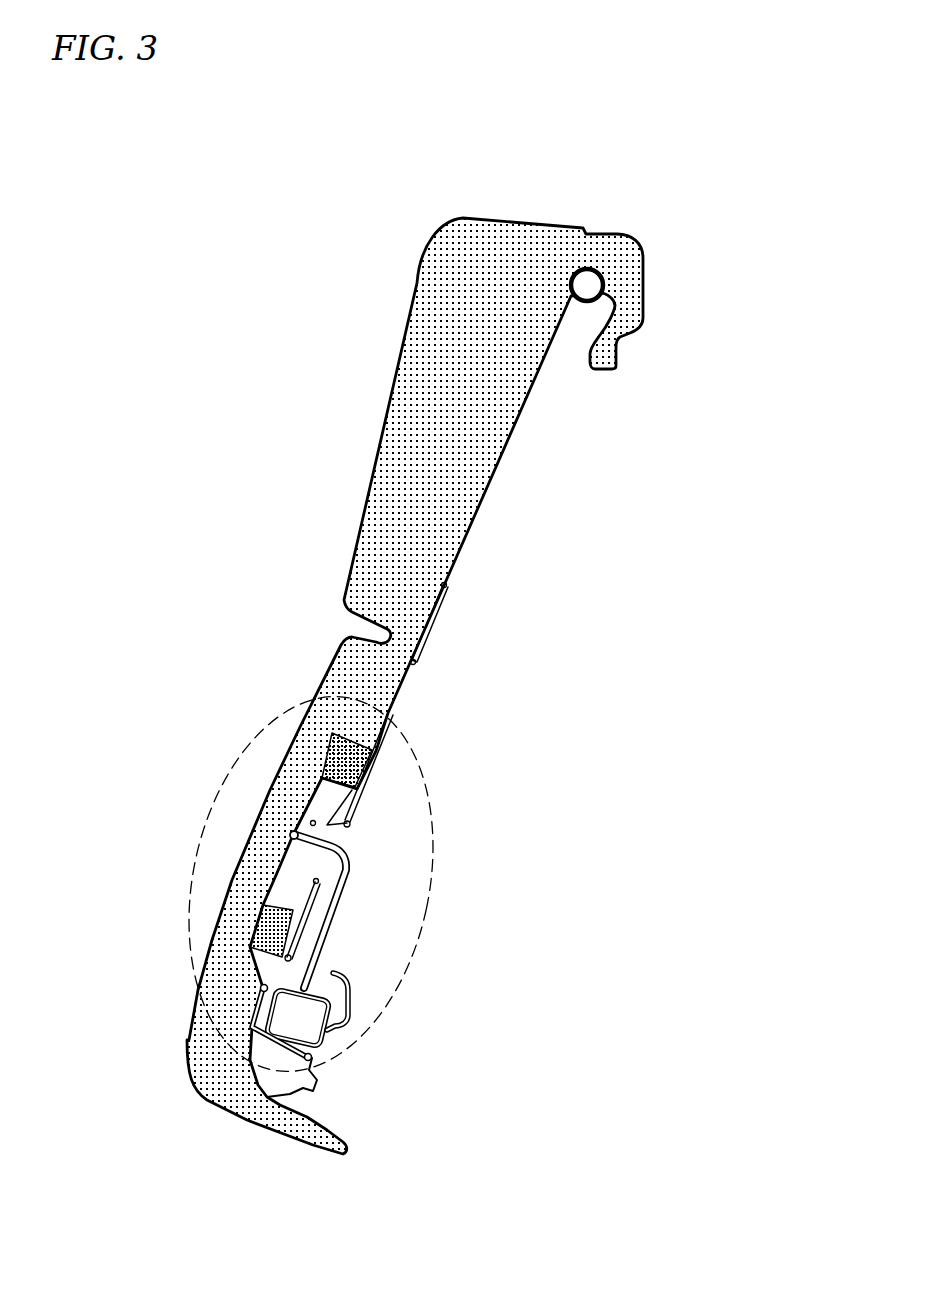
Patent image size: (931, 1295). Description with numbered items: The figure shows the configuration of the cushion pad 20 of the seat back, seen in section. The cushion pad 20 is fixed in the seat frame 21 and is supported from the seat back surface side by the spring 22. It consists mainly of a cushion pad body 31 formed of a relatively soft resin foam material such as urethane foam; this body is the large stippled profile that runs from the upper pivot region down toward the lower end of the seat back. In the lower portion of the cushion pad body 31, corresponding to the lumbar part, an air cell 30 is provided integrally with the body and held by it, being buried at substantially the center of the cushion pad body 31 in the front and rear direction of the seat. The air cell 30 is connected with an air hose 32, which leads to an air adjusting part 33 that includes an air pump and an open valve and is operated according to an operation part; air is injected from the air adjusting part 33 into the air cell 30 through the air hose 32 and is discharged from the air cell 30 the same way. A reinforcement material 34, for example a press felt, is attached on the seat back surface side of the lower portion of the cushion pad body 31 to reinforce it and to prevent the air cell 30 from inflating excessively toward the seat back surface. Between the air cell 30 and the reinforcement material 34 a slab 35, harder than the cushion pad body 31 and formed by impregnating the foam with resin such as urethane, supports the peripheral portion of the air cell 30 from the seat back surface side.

The cushion pad 20 is at (434, 222).
The seat frame 21 is at (572, 300).
The spring 22 is at (433, 613).
The air cell 30 is at (272, 883).
The cushion pad body 31 is at (405, 446).
The air hose 32 is at (350, 890).
The air adjusting part 33 is at (303, 1022).
The reinforcement material 34 is at (383, 735).
The slab 35 is at (353, 758).